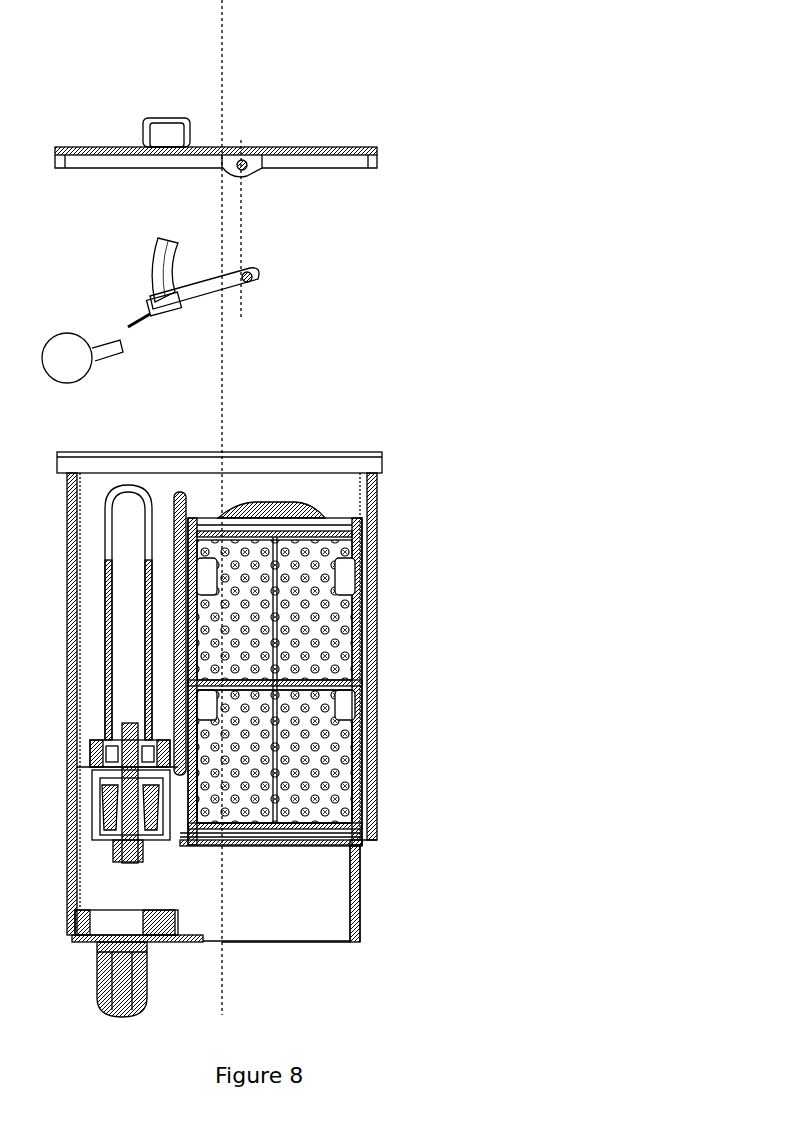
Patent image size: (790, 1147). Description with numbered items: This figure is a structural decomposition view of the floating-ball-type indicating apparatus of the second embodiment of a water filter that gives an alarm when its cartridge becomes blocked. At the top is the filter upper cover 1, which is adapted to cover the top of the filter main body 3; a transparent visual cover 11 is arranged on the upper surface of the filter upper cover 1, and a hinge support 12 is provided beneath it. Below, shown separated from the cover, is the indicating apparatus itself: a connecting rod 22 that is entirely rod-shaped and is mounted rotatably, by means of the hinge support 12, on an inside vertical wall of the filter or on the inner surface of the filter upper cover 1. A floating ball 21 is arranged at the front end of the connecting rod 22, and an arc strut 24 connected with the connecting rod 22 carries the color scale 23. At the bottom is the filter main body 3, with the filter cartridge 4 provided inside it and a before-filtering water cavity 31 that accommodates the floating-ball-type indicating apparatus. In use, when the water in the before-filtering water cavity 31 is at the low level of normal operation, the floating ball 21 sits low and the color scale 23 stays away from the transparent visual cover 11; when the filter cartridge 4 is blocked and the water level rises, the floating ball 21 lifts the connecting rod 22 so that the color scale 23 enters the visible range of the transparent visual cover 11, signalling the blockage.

The filter upper cover 1 is at (357, 148).
The transparent visual cover 11 is at (188, 127).
The hinge support 12 is at (265, 168).
The floating ball 21 is at (92, 372).
The connecting rod 22 is at (205, 297).
The color scale 23 is at (178, 241).
The arc strut 24 is at (157, 270).
The filter main body 3 is at (395, 598).
The filter cartridge 4 is at (287, 597).
The before-filtering water cavity 31 is at (330, 742).